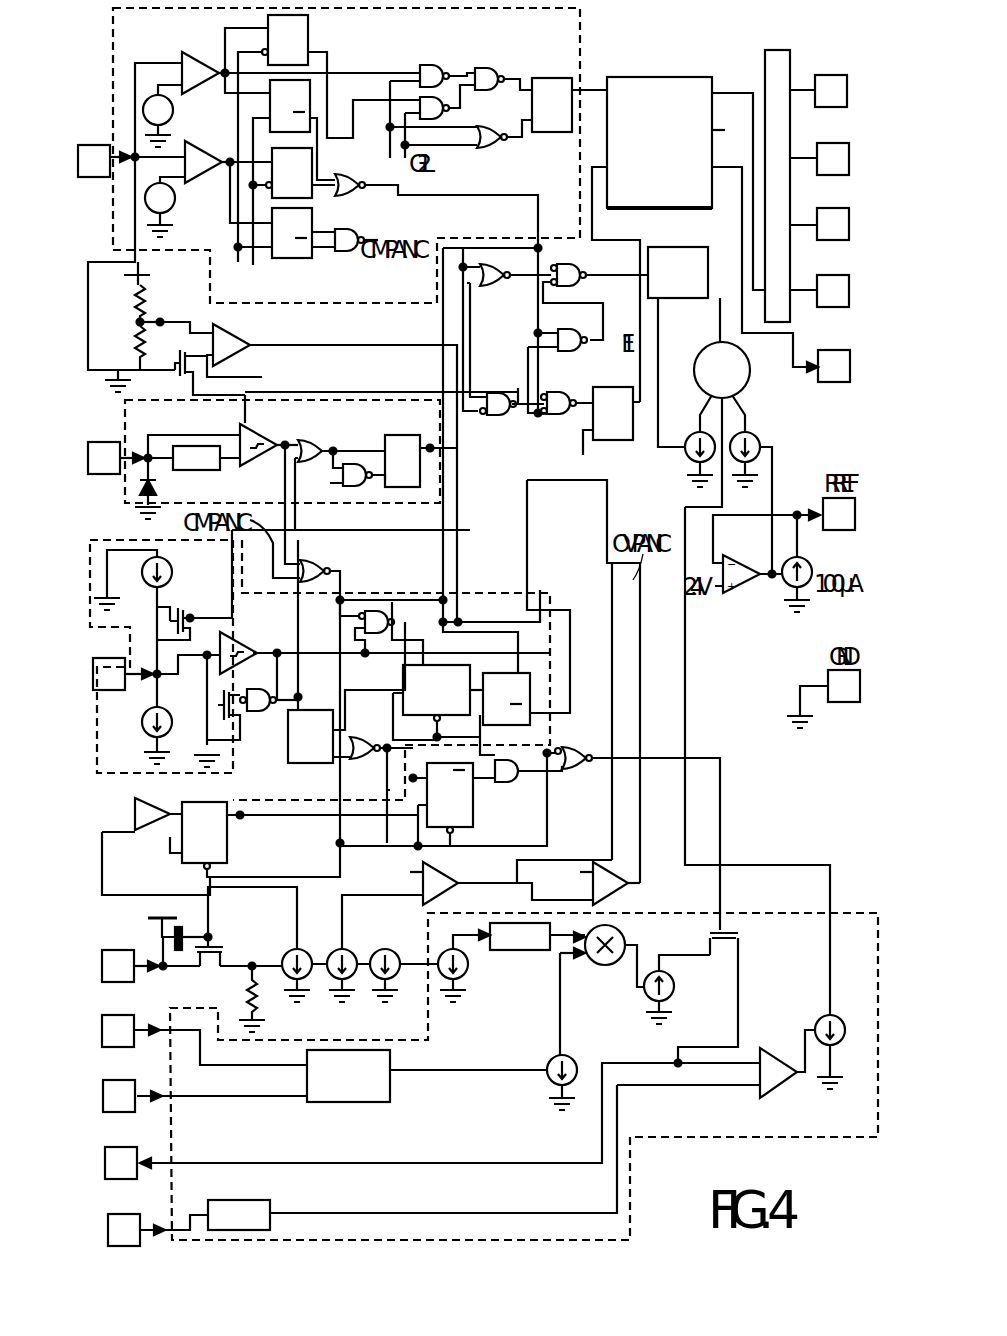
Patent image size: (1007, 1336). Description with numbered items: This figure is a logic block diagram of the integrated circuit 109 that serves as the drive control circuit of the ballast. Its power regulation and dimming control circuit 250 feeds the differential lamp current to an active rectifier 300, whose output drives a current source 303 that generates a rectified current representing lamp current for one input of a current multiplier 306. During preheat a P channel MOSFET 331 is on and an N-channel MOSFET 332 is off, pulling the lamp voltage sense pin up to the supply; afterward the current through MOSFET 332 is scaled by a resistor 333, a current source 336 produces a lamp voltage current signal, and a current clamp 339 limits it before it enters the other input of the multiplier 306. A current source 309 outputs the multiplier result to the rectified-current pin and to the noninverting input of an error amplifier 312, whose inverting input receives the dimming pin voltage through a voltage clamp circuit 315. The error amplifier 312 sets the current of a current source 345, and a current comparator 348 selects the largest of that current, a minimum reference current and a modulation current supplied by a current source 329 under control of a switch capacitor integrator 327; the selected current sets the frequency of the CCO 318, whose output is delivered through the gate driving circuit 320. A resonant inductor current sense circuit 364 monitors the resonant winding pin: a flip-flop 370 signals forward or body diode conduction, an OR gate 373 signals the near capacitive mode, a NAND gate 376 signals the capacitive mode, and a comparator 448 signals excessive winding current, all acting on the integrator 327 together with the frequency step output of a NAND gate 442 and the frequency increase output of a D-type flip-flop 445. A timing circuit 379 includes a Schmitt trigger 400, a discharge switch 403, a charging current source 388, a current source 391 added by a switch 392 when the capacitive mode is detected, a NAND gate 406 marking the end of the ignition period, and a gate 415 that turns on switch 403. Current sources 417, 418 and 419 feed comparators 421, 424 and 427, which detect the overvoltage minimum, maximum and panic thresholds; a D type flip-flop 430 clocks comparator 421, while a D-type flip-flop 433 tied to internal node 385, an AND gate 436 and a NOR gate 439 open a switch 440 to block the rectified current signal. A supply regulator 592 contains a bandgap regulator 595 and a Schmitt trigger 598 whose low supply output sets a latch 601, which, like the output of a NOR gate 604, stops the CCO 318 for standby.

The resonant inductor current sense circuit 364 is at (113, 52).
The flip-flop 370 is at (549, 78).
The current controlled oscillator (CCO/VCO) 318 is at (656, 77).
The gate driving circuit 320 is at (763, 60).
The OR gate 373 is at (368, 188).
The NAND gate 376 is at (348, 260).
The switch capacitor integrator 327 is at (656, 247).
The NAND gate 442 is at (590, 283).
The comparator 448 is at (233, 328).
The D-type flip-flop 445 is at (603, 387).
The current comparator 348 is at (750, 353).
The current source 329 is at (687, 463).
The bandgap regulator 595 is at (190, 446).
The Schmitt trigger 598 is at (260, 458).
The latch 601 is at (390, 435).
The supply regulator 592 is at (125, 484).
The timing circuit 379 is at (90, 540).
The current source 391 is at (142, 570).
The switch 392 is at (186, 618).
The NOR gate 604 is at (300, 572).
The internal node 385 is at (440, 590).
The Schmitt trigger 400 is at (235, 635).
The NAND gate 406 is at (365, 625).
The current source 388 is at (177, 703).
The switch 403 is at (240, 720).
The gate 415 is at (288, 735).
The AND gate 436 is at (503, 785).
The D-type flip-flop 433 is at (475, 820).
The NOR gate 439 is at (582, 775).
The D type flip-flop 430 is at (165, 830).
The comparator 421 is at (137, 837).
The P channel MOSFET 331 is at (195, 930).
The N-channel MOSFET 332 is at (222, 947).
The resistor 333 is at (247, 990).
The current source 417 is at (297, 948).
The current source 418 is at (342, 948).
The current source 419 is at (387, 948).
The comparator 424 is at (462, 887).
The comparator 427 is at (630, 890).
The current source (current amplifier) 336 is at (466, 977).
The current clamp 339 is at (512, 951).
The current multiplier 306 is at (605, 967).
The current source 309 is at (645, 1000).
The switch (N-channel MOSFET) 440 is at (745, 931).
The current source 345 is at (838, 1015).
The current source 303 is at (547, 1080).
The active rectifier 300 is at (308, 1103).
The error amplifier 312 is at (760, 1090).
The voltage clamp circuit 315 is at (270, 1200).
The power regulation and dimming control circuit 250 is at (860, 908).
The integrated circuit (IC) 109 is at (790, 765).